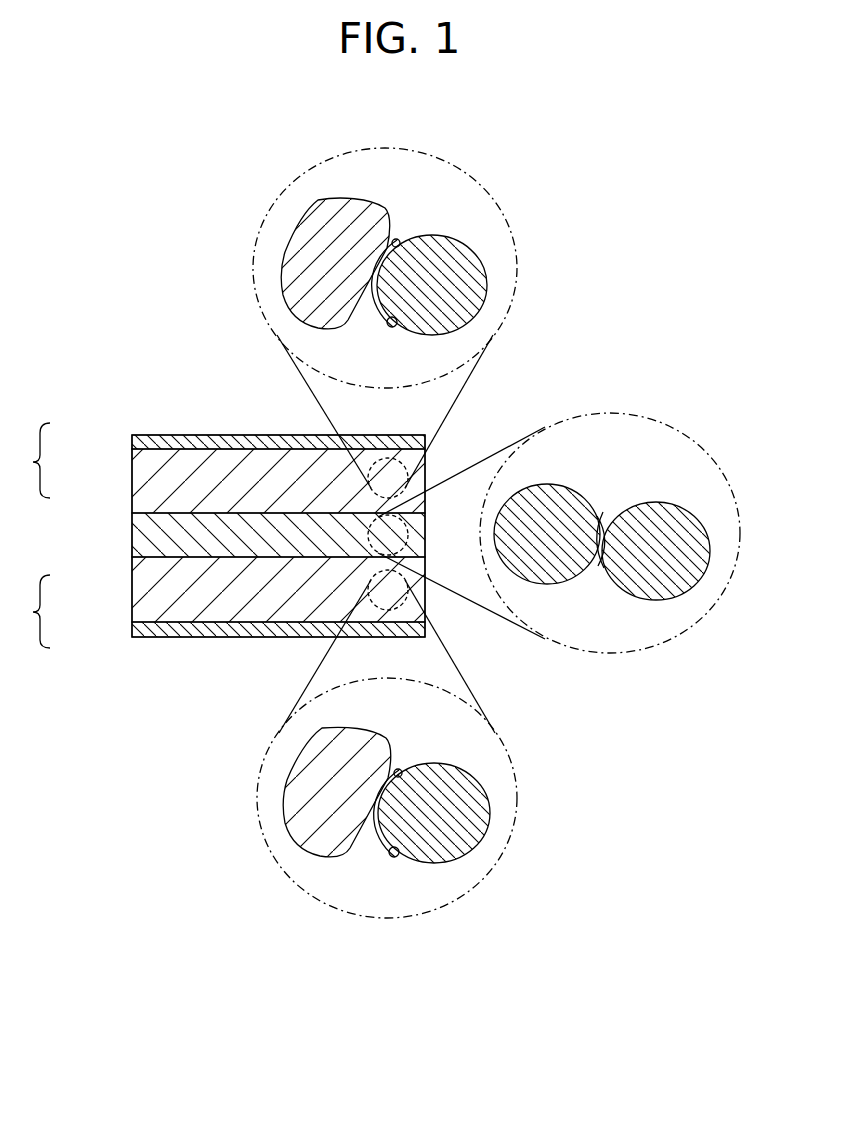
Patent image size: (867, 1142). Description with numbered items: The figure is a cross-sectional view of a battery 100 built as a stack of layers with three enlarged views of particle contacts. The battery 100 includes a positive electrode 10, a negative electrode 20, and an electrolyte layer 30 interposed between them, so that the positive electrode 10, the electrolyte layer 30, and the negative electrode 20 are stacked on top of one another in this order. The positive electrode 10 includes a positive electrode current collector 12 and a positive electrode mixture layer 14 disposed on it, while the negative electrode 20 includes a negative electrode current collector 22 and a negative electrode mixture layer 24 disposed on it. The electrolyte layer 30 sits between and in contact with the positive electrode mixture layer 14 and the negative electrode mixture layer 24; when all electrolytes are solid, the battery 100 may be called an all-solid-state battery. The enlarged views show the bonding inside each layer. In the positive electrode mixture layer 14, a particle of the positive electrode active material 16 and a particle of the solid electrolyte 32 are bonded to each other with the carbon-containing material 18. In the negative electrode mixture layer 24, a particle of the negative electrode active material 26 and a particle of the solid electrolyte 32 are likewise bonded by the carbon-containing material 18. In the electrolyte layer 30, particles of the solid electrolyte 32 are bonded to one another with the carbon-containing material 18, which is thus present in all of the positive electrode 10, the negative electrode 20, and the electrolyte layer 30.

The battery 100 is at (173, 401).
The positive electrode 10 is at (214, 468).
The positive electrode current collector 12 is at (147, 443).
The positive electrode mixture layer 14 is at (160, 480).
The electrolyte layer 30 is at (160, 537).
The negative electrode 20 is at (214, 604).
The negative electrode mixture layer 24 is at (160, 592).
The negative electrode current collector 22 is at (150, 628).
The positive electrode active material 16 is at (313, 237).
The negative electrode active material 26 is at (310, 815).
The solid electrolyte 32 is at (460, 285).
The carbon-containing material 18 is at (398, 240).